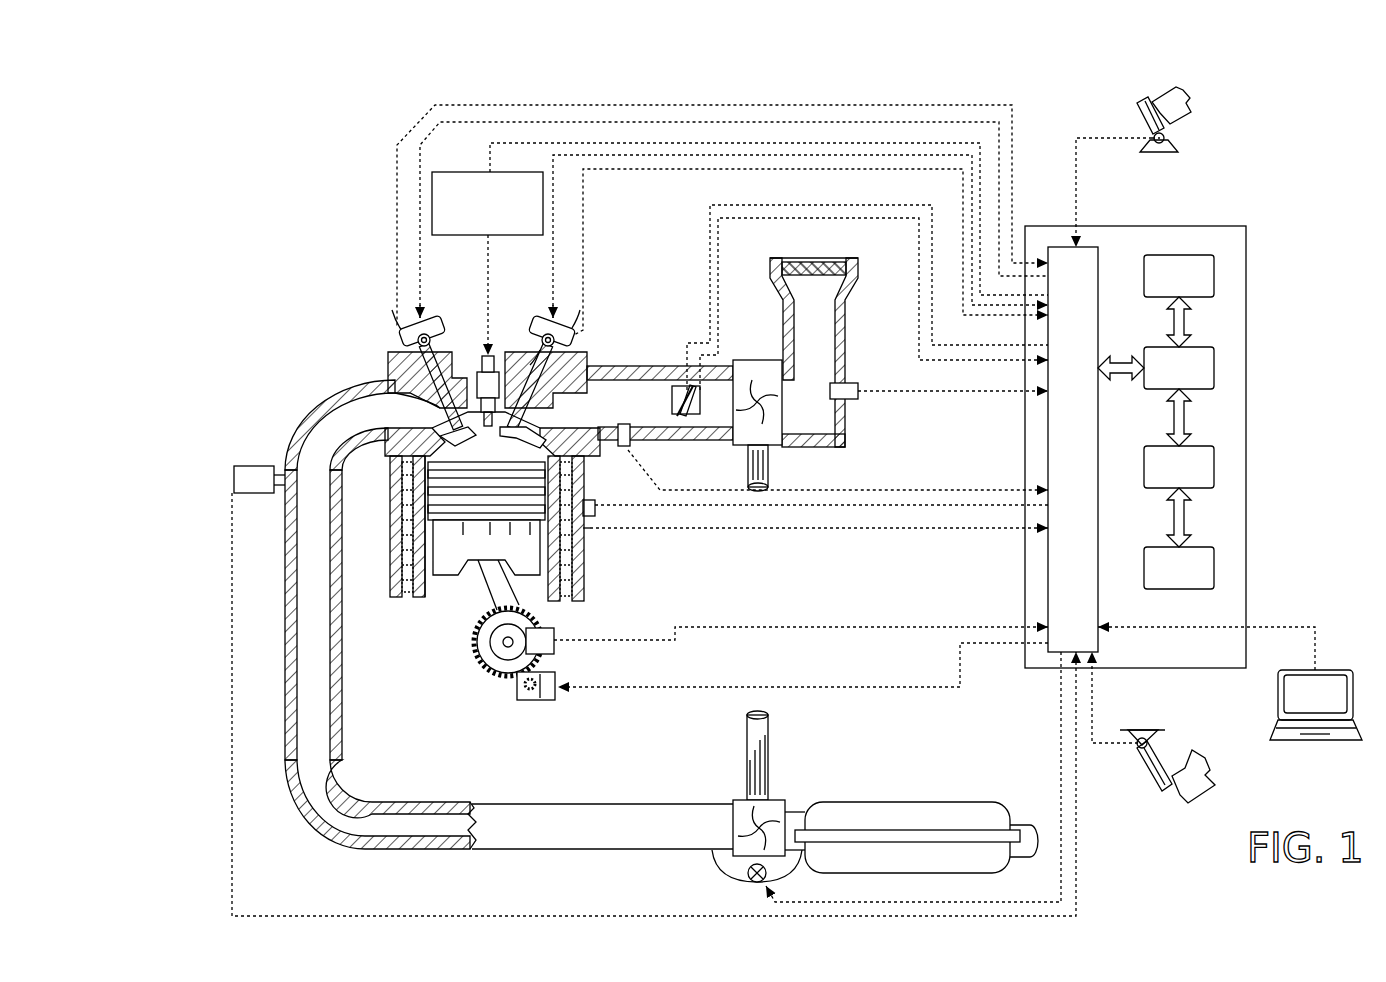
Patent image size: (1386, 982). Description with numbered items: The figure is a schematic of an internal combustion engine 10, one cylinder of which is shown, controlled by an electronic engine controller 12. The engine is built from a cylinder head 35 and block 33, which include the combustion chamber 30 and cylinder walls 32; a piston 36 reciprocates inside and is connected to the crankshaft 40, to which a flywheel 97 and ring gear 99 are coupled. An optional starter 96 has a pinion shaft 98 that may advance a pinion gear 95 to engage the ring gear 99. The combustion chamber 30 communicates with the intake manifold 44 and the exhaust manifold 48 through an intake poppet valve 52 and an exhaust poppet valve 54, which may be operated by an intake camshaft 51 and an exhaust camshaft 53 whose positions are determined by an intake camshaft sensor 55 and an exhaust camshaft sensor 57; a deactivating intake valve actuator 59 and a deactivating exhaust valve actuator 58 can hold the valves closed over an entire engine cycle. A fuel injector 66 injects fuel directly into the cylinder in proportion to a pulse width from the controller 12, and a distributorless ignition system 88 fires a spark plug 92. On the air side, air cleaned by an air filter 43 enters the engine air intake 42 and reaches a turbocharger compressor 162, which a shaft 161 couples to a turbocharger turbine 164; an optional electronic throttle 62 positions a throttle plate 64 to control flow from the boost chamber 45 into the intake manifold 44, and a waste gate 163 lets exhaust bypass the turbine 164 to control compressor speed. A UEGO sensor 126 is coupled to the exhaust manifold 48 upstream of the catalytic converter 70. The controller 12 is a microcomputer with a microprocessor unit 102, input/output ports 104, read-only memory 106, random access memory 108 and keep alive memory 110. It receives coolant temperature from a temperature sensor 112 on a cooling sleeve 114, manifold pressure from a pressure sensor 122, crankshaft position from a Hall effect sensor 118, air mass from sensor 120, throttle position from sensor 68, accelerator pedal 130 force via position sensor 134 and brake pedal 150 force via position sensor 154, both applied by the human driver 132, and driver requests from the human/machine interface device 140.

The internal combustion engine 10 is at (325, 305).
The electronic engine controller 12 is at (1246, 228).
The combustion chamber 30 is at (405, 525).
The cylinder walls 32 is at (432, 598).
The block 33 is at (386, 488).
The cylinder head 35 is at (386, 350).
The piston 36 is at (472, 558).
The crankshaft 40 is at (490, 670).
The engine air intake 42 is at (860, 270).
The air filter 43 is at (835, 275).
The intake manifold 44 is at (614, 416).
The boost chamber 45 is at (727, 416).
The exhaust manifold 48 is at (371, 421).
The intake camshaft 51 is at (545, 320).
The intake poppet valve 52 is at (538, 398).
The exhaust camshaft 53 is at (428, 320).
The exhaust poppet valve 54 is at (400, 393).
The intake camshaft sensor 55 is at (568, 335).
The exhaust camshaft sensor 57 is at (408, 335).
The deactivating exhaust valve actuator 58 is at (442, 350).
The deactivating intake valve actuator 59 is at (538, 356).
The electronic throttle 62 is at (678, 396).
The throttle plate 64 is at (678, 410).
The fuel injector 66 is at (532, 447).
The throttle position sensor 68 is at (700, 385).
The catalytic converter 70 is at (840, 802).
The distributorless ignition system 88 is at (446, 172).
The spark plug 92 is at (492, 356).
The pinion gear 95 is at (543, 700).
The starter 96 is at (550, 700).
The flywheel 97 is at (482, 653).
The pinion shaft 98 is at (528, 692).
The ring gear 99 is at (498, 676).
The microprocessor unit 102 is at (1214, 362).
The input/output ports 104 is at (1098, 255).
The read-only memory 106 is at (1214, 268).
The random access memory 108 is at (1214, 462).
The keep alive memory 110 is at (1214, 563).
The temperature sensor 112 is at (595, 508).
The cooling sleeve 114 is at (572, 535).
The Hall effect sensor 118 is at (554, 632).
The air mass sensor 120 is at (846, 383).
The pressure sensor 122 is at (624, 447).
The Universal Exhaust Gas Oxygen sensor 126 is at (234, 474).
The accelerator pedal 130 is at (1142, 108).
The human driver 132 is at (1190, 97).
The position sensor 134 is at (1166, 140).
The human/machine interface device 140 is at (1292, 741).
The brake pedal 150 is at (1163, 792).
The position sensor 154 is at (1126, 738).
The shaft 161 is at (768, 462).
The turbocharger compressor 162 is at (780, 430).
The waste gate 163 is at (750, 882).
The turbocharger turbine 164 is at (733, 800).